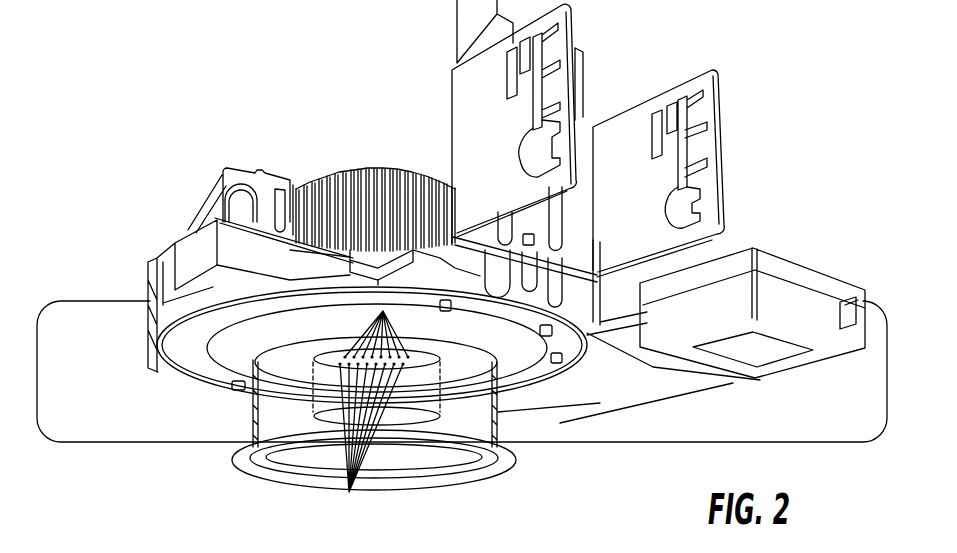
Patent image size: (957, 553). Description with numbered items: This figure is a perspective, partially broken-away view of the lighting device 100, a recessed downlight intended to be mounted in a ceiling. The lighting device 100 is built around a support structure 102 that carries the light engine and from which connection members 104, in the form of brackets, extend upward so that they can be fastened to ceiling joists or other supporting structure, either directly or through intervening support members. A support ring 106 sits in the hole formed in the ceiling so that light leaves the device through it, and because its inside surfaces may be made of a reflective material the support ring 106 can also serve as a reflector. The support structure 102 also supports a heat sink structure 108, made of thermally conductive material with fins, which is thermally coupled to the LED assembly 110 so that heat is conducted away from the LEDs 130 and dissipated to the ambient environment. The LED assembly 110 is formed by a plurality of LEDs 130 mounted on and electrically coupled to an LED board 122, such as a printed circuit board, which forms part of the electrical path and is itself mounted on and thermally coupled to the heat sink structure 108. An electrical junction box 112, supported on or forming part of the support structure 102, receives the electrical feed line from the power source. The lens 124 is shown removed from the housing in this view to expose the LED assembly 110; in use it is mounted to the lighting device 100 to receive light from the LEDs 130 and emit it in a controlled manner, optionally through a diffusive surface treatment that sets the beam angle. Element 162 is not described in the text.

The lighting device 100 is at (758, 86).
The support structure 102 is at (246, 262).
The connection members 104 is at (240, 170).
The support ring 106 is at (505, 430).
The heat sink structure 108 is at (418, 167).
The LED assembly 110 is at (440, 360).
The electrical junction box 112 is at (722, 250).
The LED board 122 is at (331, 358).
The lens 124 is at (403, 418).
The LEDs 130 is at (371, 408).
The clip 162 is at (253, 383).